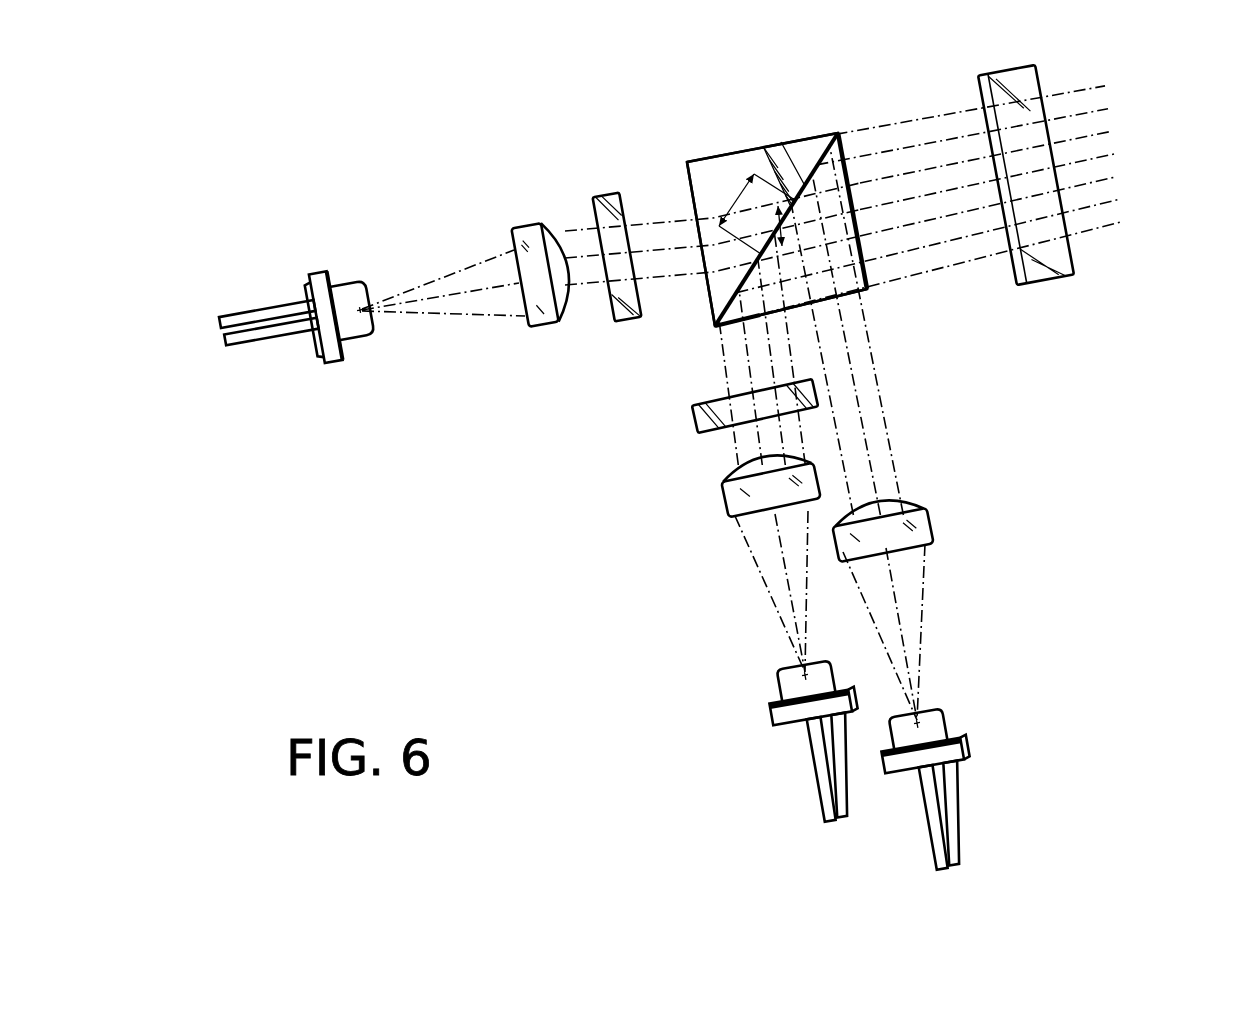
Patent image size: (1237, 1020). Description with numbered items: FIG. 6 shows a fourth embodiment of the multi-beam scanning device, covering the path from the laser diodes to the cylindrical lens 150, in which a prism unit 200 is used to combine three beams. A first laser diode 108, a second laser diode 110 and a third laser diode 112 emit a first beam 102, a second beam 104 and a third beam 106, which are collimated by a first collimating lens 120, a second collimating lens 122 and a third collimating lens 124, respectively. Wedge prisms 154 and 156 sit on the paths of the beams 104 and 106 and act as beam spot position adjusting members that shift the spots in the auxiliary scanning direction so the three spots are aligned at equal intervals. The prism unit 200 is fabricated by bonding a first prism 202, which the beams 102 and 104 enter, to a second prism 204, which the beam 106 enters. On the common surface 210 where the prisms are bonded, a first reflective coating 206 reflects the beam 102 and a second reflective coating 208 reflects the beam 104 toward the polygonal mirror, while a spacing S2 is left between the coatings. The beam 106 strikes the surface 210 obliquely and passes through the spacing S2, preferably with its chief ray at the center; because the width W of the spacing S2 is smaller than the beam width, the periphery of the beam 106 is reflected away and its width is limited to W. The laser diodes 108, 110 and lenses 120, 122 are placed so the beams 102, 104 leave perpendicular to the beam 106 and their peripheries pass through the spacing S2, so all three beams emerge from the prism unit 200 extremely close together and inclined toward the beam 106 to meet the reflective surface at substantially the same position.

The first beam 102 is at (920, 606).
The second beam 104 is at (765, 596).
The third beam 106 is at (440, 272).
The first laser diode 108 is at (894, 774).
The second laser diode 110 is at (785, 727).
The third laser diode 112 is at (328, 350).
The first collimating lens 120 is at (930, 530).
The second collimating lens 122 is at (728, 500).
The third collimating lens 124 is at (520, 328).
The cylindrical lens 150 is at (1046, 288).
The wedge prism 154 is at (695, 420).
The wedge prism 156 is at (598, 208).
The prism unit 200 is at (912, 340).
The first prism 202 is at (868, 268).
The second prism 204 is at (689, 168).
The first reflective coating 206 is at (843, 142).
The second reflective coating 208 is at (716, 326).
The common surface 210 is at (777, 208).
The spacing S2 is at (748, 212).
The width W is at (792, 236).